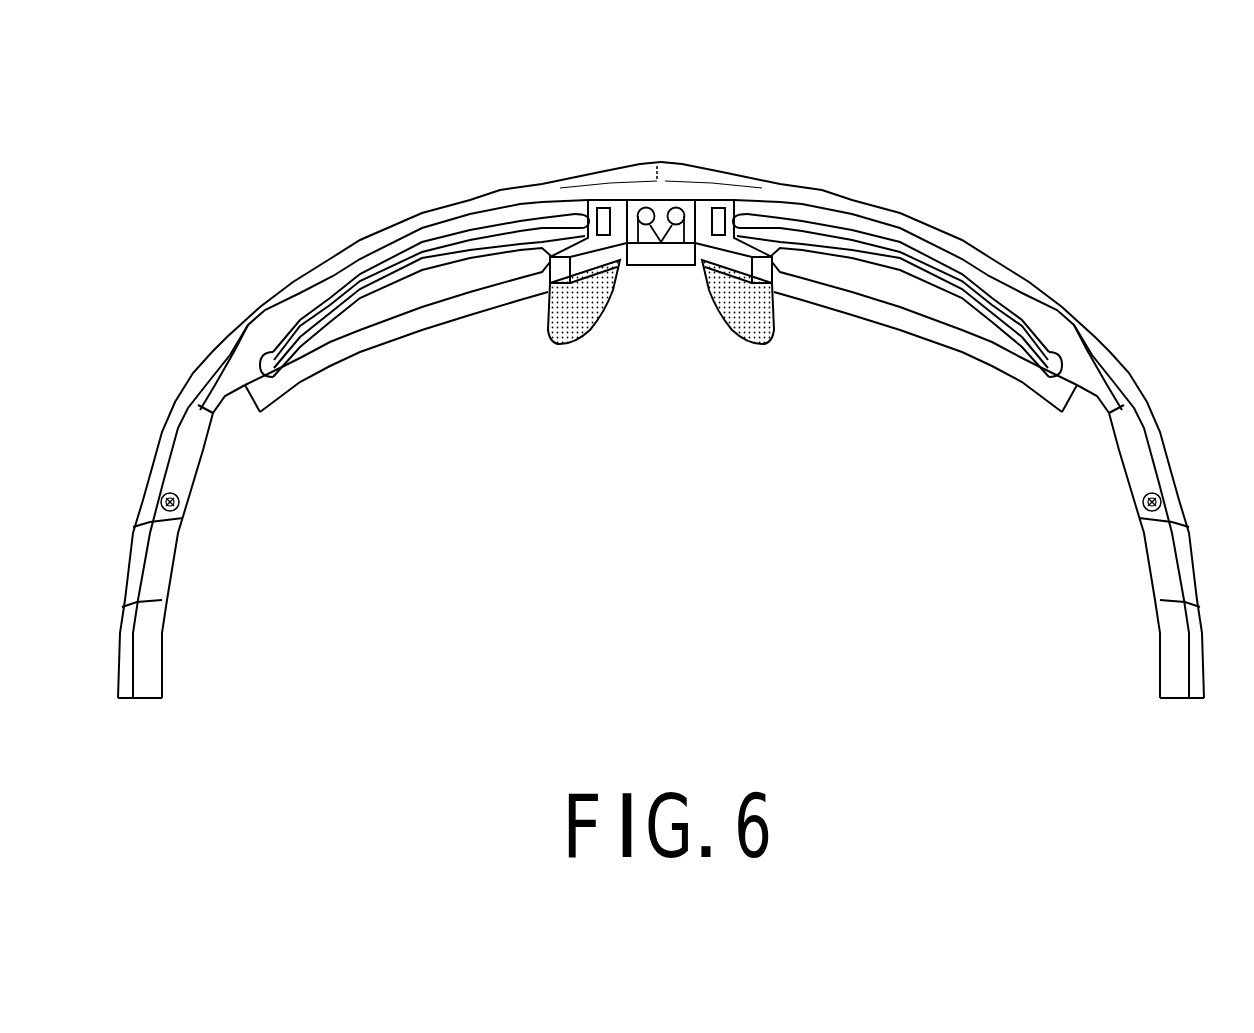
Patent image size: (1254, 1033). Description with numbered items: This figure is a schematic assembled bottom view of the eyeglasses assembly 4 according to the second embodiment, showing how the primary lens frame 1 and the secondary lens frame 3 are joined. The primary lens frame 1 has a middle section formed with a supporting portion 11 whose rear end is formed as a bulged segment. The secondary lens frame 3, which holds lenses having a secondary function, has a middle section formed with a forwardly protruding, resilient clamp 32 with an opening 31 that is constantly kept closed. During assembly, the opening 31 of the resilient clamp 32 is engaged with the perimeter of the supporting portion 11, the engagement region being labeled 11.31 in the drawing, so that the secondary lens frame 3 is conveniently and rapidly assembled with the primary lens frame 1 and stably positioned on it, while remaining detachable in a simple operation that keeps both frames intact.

The primary lens frame 1 is at (1158, 443).
The secondary lens frame 3 is at (950, 335).
The lens 4 is at (698, 413).
The supporting portion 11 is at (649, 198).
The opening 31 is at (638, 210).
The bridge portion and nose pad support 11.31 is at (649, 198).
The resilient clamp 32 is at (688, 212).